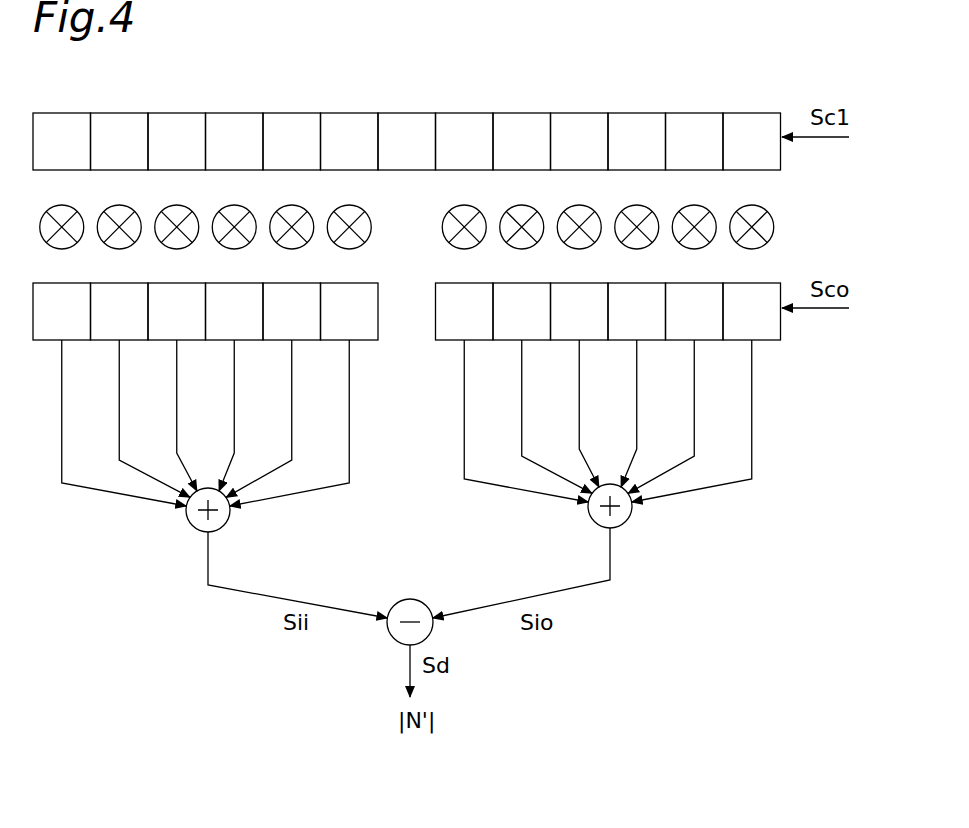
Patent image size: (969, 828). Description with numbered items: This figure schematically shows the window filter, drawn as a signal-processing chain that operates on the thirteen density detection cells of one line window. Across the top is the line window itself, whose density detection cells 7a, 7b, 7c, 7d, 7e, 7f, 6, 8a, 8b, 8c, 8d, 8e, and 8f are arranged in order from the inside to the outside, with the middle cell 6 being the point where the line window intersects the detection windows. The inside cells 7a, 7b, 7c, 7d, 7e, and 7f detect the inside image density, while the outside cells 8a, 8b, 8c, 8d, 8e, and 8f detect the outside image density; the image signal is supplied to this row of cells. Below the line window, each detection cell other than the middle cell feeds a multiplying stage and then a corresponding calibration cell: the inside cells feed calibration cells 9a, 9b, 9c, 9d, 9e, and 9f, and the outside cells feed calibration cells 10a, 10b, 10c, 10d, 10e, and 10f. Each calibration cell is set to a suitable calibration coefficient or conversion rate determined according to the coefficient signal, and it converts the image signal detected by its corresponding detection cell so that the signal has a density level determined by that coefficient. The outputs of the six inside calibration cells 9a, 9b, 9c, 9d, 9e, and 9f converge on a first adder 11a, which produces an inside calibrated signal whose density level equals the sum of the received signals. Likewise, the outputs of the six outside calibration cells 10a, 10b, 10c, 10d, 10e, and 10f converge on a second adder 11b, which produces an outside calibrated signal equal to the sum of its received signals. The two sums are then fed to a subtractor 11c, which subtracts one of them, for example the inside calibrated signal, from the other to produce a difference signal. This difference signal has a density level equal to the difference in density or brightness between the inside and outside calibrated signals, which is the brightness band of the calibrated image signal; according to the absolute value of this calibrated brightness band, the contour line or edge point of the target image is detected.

The middle cell 6 is at (407, 141).
The density detection cell 7a is at (62, 141).
The density detection cell 7b is at (120, 141).
The density detection cell 7c is at (177, 141).
The density detection cell 7d is at (235, 141).
The density detection cell 7e is at (292, 141).
The density detection cell 7f is at (350, 141).
The density detection cell 8a is at (465, 141).
The density detection cell 8b is at (522, 141).
The density detection cell 8c is at (580, 141).
The density detection cell 8d is at (637, 141).
The density detection cell 8e is at (695, 141).
The density detection cell 8f is at (752, 141).
The calibration cell 9a is at (109, 394).
The calibration cell 9b is at (141, 390).
The calibration cell 9c is at (177, 387).
The calibration cell 9d is at (235, 387).
The calibration cell 9e is at (273, 390).
The calibration cell 9f is at (304, 394).
The calibration cell 10a is at (512, 392).
The calibration cell 10b is at (542, 388).
The calibration cell 10c is at (580, 385).
The calibration cell 10d is at (637, 385).
The calibration cell 10e is at (675, 388).
The calibration cell 10f is at (706, 392).
The first adder 11a is at (189, 529).
The second adder 11b is at (622, 525).
The subtractor 11c is at (410, 599).